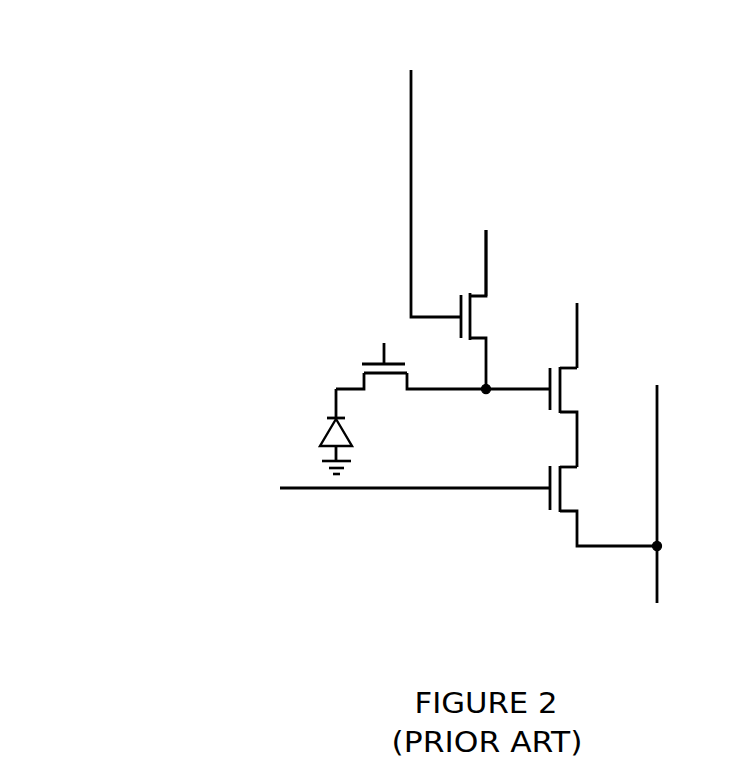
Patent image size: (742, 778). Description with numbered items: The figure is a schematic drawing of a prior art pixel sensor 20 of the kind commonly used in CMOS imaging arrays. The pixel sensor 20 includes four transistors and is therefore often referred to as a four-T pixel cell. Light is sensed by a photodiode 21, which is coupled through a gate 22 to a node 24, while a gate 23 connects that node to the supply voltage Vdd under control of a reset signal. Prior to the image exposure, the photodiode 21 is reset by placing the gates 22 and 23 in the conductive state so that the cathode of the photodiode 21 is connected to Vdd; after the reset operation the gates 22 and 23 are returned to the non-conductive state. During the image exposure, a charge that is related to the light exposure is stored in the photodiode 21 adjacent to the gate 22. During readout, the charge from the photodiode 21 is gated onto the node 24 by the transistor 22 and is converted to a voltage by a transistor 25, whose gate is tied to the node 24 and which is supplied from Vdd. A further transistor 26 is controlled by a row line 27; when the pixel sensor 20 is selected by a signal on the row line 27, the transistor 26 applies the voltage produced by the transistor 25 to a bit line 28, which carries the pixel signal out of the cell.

The pixel sensor 20 is at (152, 70).
The photodiode 21 is at (345, 422).
The gate 22 is at (364, 359).
The gate 23 is at (458, 300).
The node 24 is at (484, 392).
The transistor 25 is at (566, 408).
The transistor 26 is at (568, 506).
The row line 27 is at (435, 490).
The bit line 28 is at (660, 407).